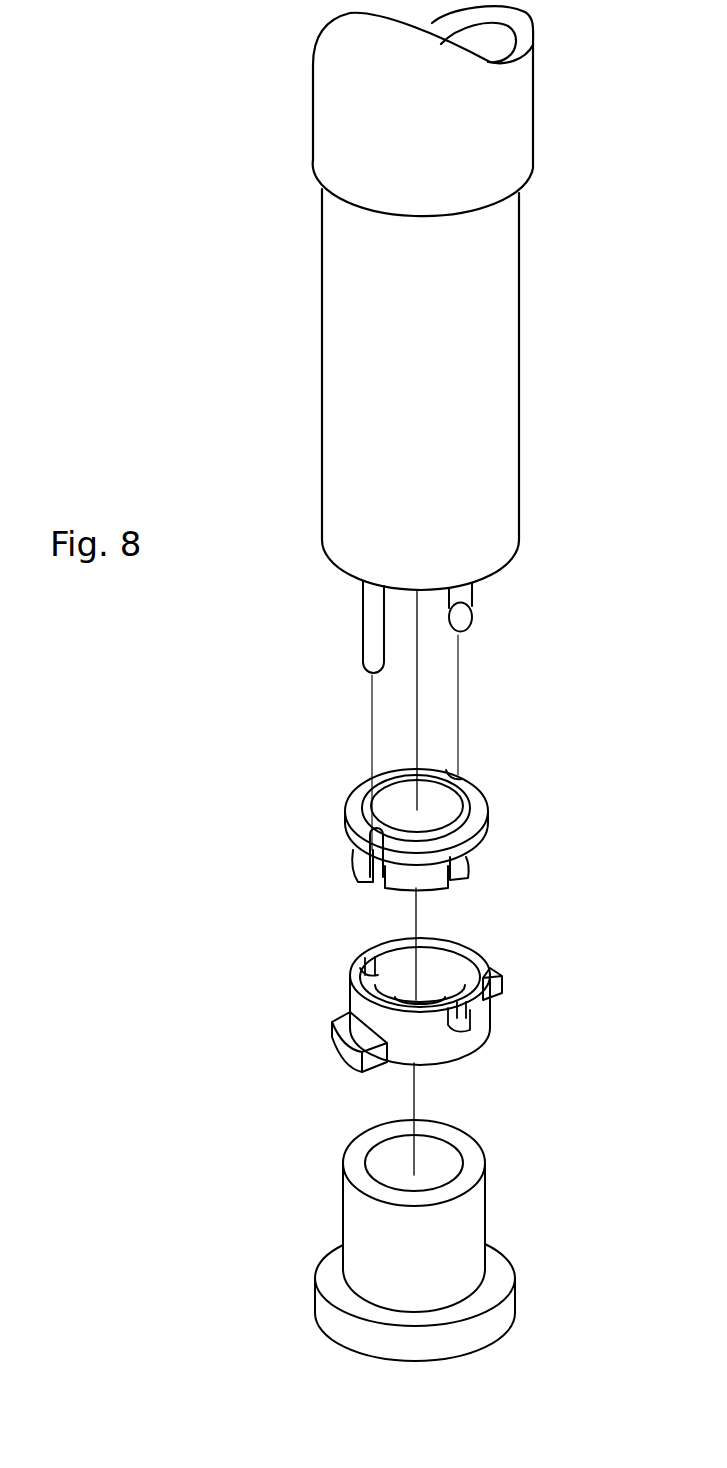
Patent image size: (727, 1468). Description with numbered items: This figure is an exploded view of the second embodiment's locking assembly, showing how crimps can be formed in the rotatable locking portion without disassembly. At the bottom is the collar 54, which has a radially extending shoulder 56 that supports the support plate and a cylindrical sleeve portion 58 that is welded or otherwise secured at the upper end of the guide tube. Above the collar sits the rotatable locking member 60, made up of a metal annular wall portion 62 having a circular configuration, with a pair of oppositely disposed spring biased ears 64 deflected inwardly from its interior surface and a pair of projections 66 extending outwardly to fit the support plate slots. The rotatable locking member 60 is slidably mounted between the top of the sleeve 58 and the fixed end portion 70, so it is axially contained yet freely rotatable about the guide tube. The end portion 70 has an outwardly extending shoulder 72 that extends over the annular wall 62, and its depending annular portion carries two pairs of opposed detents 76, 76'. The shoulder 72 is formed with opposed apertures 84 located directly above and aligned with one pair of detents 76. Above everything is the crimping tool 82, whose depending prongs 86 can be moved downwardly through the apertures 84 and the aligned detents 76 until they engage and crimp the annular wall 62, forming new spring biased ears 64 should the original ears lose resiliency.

The collar 54 is at (432, 1240).
The radially extending shoulder 56 is at (505, 1306).
The cylindrical sleeve portion 58 is at (358, 1143).
The rotatable locking member 60 is at (412, 1008).
The annular wall portion 62 is at (445, 1058).
The spring biased ears 64 is at (370, 953).
The projections 66 is at (503, 968).
The end portion 70 is at (416, 830).
The outwardly extending shoulder 72 is at (478, 827).
The detents 76 is at (381, 882).
The detents 76' is at (490, 886).
The crimping tool 82 is at (478, 383).
The apertures 84 is at (450, 779).
The prongs 86 is at (372, 632).